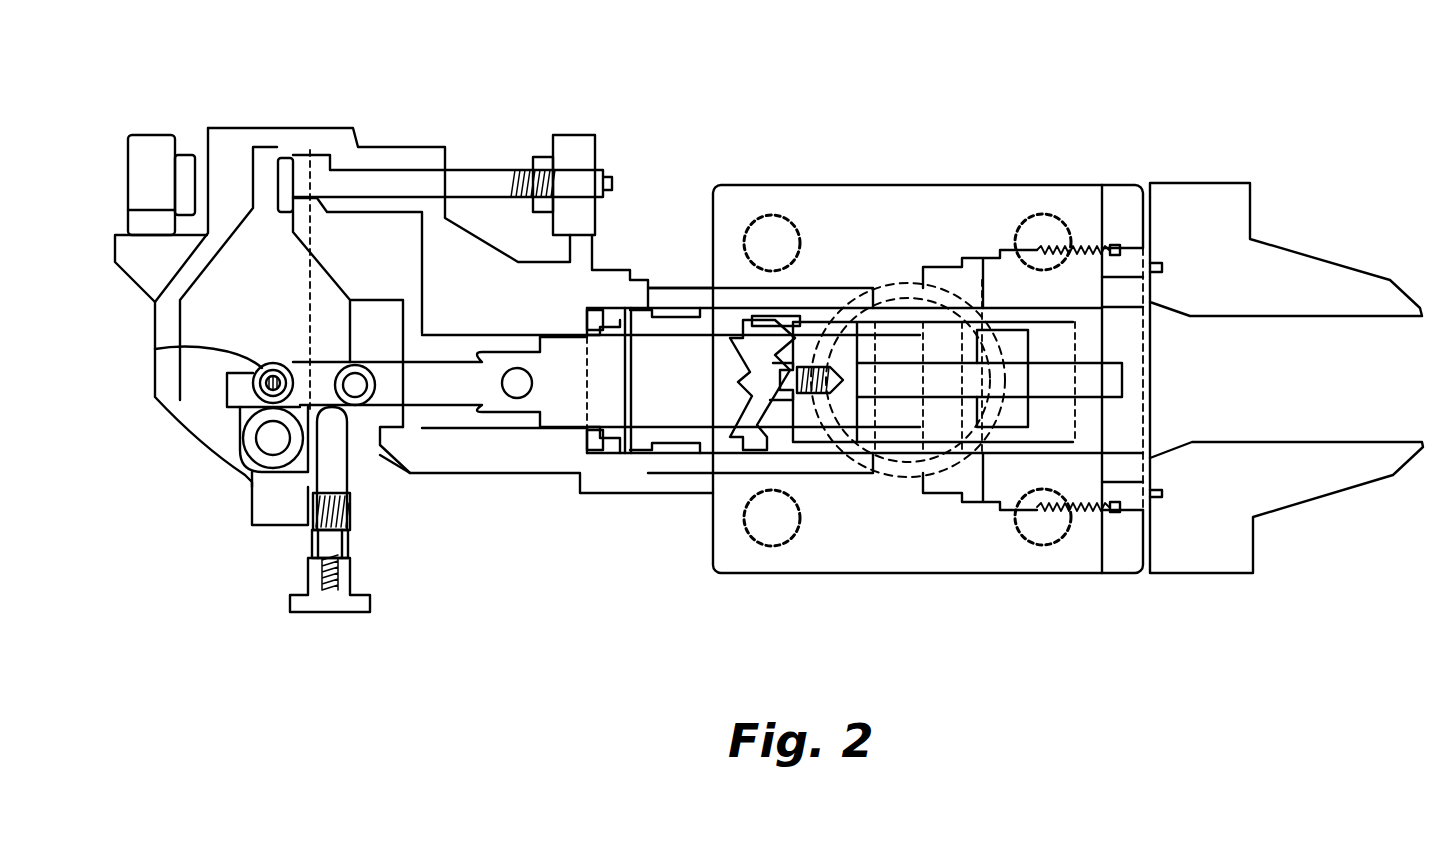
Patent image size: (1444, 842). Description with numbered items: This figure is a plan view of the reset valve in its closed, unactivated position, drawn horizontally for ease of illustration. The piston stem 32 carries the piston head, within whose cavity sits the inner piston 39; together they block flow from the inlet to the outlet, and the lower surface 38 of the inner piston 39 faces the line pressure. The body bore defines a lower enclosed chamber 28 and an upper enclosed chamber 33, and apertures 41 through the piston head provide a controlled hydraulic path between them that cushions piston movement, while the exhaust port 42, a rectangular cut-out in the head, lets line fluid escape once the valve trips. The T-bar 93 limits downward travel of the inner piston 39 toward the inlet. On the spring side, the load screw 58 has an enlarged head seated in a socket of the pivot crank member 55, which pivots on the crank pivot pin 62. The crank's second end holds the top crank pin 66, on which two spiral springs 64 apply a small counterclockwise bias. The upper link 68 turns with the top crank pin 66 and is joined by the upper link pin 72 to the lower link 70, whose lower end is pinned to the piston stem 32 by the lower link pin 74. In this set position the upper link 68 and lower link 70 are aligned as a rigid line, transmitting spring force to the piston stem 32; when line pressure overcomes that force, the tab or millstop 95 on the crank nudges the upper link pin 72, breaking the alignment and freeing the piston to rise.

The lower enclosed chamber 28 is at (757, 392).
The piston stem 32 is at (562, 358).
The upper enclosed chamber 33 is at (647, 440).
The lower surface of the inner piston 38 is at (780, 345).
The inner piston 39 is at (812, 343).
The apertures 41 is at (673, 170).
The exhaust port 42 is at (1013, 378).
The pivot crank member 55 is at (332, 265).
The load screw 58 is at (468, 178).
The crank pivot pin 62 is at (277, 438).
The spiral springs 64 is at (158, 351).
The top crank pin 66 is at (271, 386).
The upper link 68 is at (345, 372).
The lower link 70 is at (443, 383).
The upper link pin 72 is at (365, 405).
The lower link pin 74 is at (509, 385).
The T-bar 93 is at (1113, 380).
The tab or millstop 95 is at (343, 407).